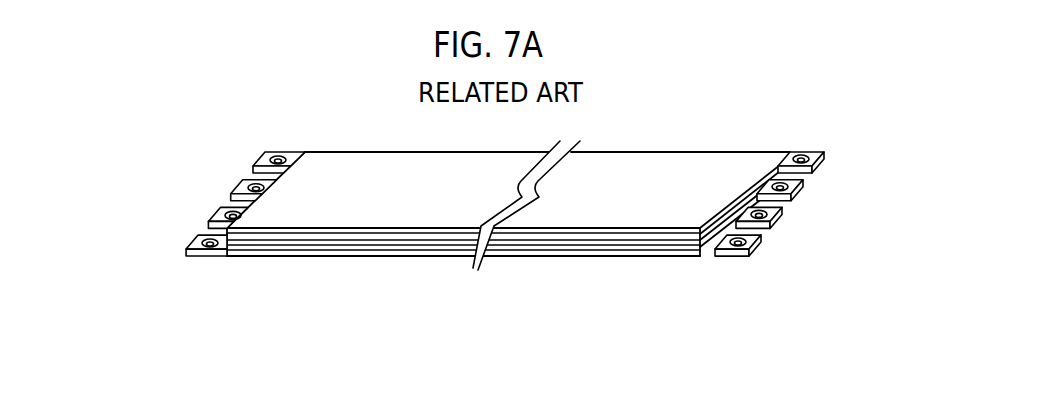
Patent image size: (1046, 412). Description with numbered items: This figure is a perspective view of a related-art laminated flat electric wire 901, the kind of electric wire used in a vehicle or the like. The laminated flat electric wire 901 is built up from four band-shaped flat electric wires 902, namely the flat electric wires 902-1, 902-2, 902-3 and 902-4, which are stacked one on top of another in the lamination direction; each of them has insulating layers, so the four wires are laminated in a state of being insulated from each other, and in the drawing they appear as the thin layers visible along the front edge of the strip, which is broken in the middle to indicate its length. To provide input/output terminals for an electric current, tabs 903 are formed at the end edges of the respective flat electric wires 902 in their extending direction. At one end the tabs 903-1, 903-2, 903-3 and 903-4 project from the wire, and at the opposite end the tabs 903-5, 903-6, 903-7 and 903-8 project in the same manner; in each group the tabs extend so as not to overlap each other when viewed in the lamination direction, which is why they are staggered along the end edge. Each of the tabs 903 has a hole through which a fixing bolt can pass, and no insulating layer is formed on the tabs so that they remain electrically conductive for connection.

The laminated flat electric wire 901 is at (501, 243).
The flat electric wires 902 is at (497, 260).
The flat electric wire 902-1 is at (260, 229).
The flat electric wire 902-2 is at (328, 240).
The flat electric wire 902-3 is at (397, 247).
The flat electric wire 902-4 is at (244, 310).
The tabs 903 is at (501, 210).
The tab 903-1 is at (820, 168).
The tab 903-2 is at (800, 195).
The tab 903-3 is at (784, 216).
The tab 903-4 is at (762, 246).
The tab 903-5 is at (253, 160).
The tab 903-6 is at (239, 188).
The tab 903-7 is at (216, 214).
The tab 903-8 is at (193, 241).